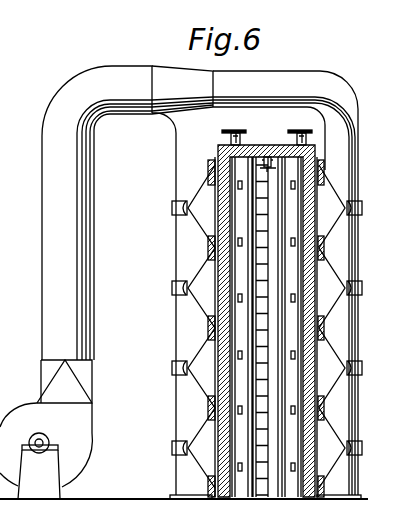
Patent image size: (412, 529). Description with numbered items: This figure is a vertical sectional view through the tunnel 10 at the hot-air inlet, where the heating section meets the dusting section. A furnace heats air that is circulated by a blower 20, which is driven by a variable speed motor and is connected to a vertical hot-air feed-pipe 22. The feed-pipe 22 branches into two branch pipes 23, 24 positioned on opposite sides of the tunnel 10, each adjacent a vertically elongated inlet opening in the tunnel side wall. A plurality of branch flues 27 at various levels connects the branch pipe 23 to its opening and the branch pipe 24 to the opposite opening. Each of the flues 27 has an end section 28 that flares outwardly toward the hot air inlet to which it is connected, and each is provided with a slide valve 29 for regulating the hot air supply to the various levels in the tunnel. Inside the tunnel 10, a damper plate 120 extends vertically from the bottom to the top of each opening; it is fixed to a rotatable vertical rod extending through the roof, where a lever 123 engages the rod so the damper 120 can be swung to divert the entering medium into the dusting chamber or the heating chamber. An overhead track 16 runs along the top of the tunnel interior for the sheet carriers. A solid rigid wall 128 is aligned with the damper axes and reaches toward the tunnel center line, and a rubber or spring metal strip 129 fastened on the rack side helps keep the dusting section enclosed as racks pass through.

The tunnel 10 is at (317, 153).
The overhead track 16 is at (266, 160).
The blower 20 is at (72, 470).
The vertical hot-air feed-pipe 22 is at (94, 271).
The branch pipe 23 is at (356, 121).
The branch pipe 24 is at (180, 146).
The branch flues 27 is at (183, 204).
The end section 28 is at (200, 315).
The slide valve 29 is at (172, 210).
The damper plate 120 is at (232, 477).
The lever 123 is at (233, 130).
The rigid wall 128 is at (285, 425).
The spring metal strip 129 is at (255, 400).